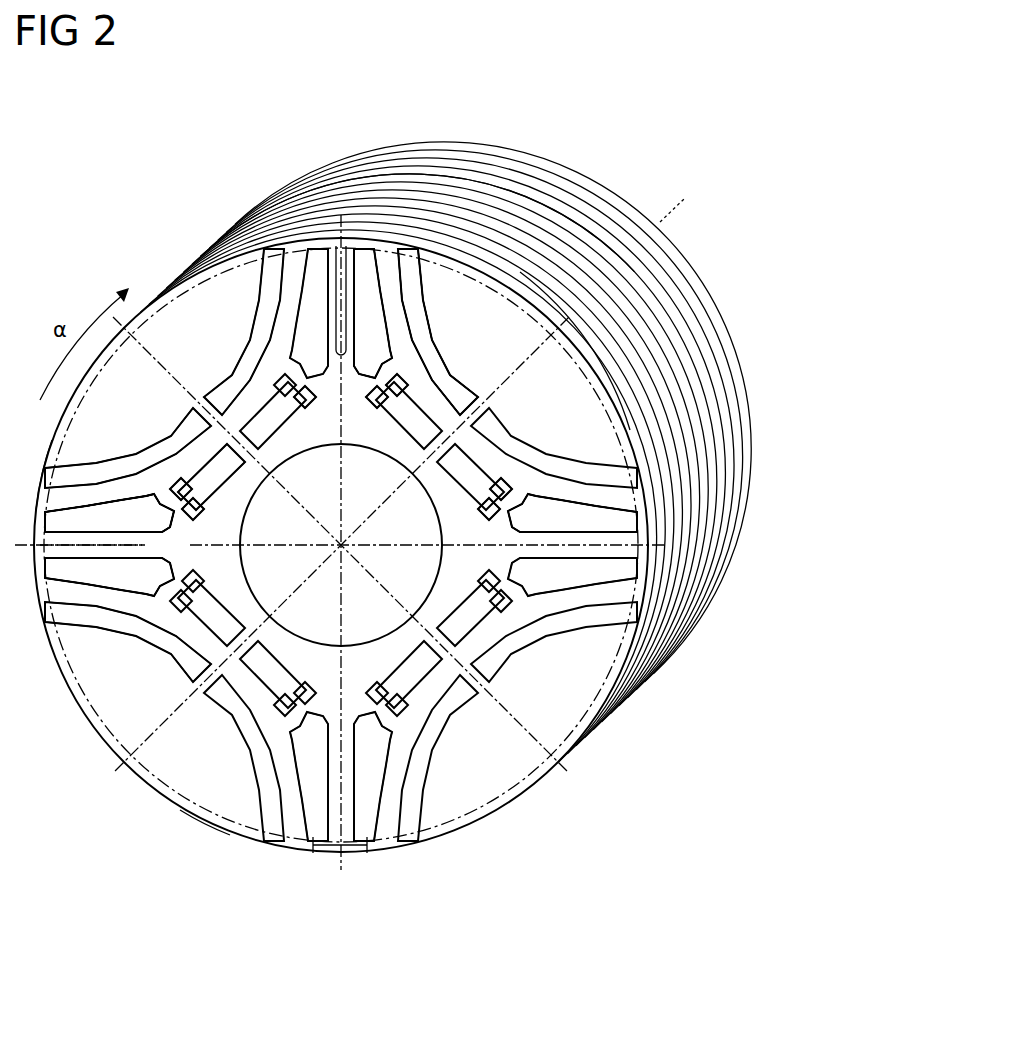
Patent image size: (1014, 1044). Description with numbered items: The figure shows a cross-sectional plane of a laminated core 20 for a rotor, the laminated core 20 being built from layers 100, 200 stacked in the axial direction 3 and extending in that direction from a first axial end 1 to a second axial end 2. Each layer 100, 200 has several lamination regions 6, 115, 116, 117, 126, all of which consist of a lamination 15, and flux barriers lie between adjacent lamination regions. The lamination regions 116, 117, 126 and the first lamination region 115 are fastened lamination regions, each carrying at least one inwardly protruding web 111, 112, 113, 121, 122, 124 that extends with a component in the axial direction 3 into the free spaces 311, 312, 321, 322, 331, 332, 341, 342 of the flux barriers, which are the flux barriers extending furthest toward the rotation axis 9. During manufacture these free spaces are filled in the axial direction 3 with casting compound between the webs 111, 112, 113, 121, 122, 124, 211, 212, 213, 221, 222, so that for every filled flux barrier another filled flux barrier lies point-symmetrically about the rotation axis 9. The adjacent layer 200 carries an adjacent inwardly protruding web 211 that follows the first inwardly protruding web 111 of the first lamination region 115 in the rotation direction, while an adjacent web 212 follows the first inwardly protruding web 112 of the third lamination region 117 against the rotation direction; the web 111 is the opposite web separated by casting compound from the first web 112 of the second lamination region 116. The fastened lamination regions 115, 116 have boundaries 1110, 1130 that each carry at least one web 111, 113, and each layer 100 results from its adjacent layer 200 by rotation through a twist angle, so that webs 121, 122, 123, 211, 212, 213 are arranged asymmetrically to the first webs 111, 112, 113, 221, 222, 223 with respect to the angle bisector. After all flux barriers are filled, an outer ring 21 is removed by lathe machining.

The first axial end 1 is at (502, 831).
The second axial end 2 is at (446, 452).
The axial direction 3 is at (396, 383).
The lamination region 6 is at (170, 780).
The rotation axis 9 is at (344, 549).
The lamination 15 is at (203, 823).
The laminated core 20 is at (210, 170).
The outer ring 21 is at (231, 823).
The layer 100 is at (583, 349).
The first inwardly protruding web 111 is at (232, 525).
The first inwardly protruding web 112 is at (278, 357).
The inwardly protruding web 113 is at (140, 475).
The first lamination region 115 is at (115, 542).
The second lamination region 116 is at (38, 467).
The third lamination region 117 is at (337, 244).
The inwardly protruding web 121 is at (216, 594).
The inwardly protruding web 122 is at (443, 395).
The inwardly protruding web 123 is at (491, 482).
The inwardly protruding web 124 is at (398, 353).
The lamination region 126 is at (388, 256).
The layer 200 is at (521, 269).
The adjacent inwardly protruding web 211 is at (206, 497).
The adjacent inwardly protruding web 212 is at (311, 408).
The inwardly protruding web 213 is at (180, 470).
The inwardly protruding web 221 is at (483, 510).
The inwardly protruding web 222 is at (364, 408).
The inwardly protruding web 223 is at (504, 467).
The free space 311 is at (126, 502).
The free space 312 is at (316, 330).
The free space 321 is at (600, 512).
The free space 322 is at (363, 281).
The free space 331 is at (588, 569).
The free space 332 is at (364, 850).
The free space 341 is at (105, 571).
The free space 342 is at (314, 850).
The boundary 1110 is at (64, 523).
The boundary 1130 is at (90, 507).